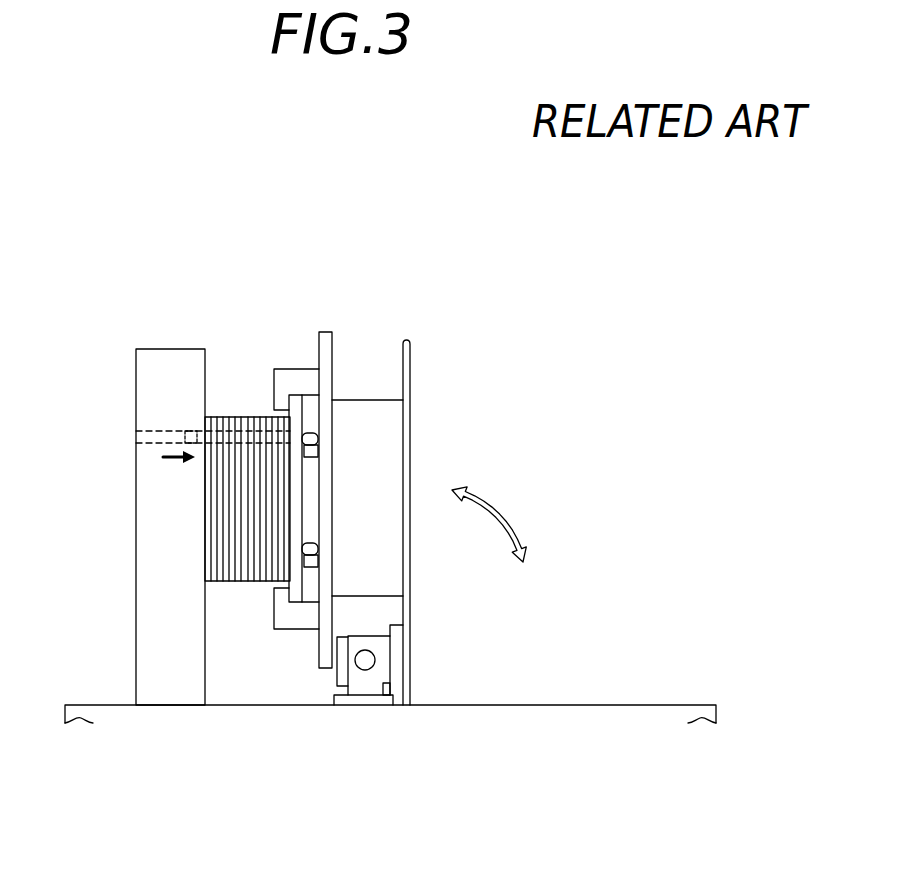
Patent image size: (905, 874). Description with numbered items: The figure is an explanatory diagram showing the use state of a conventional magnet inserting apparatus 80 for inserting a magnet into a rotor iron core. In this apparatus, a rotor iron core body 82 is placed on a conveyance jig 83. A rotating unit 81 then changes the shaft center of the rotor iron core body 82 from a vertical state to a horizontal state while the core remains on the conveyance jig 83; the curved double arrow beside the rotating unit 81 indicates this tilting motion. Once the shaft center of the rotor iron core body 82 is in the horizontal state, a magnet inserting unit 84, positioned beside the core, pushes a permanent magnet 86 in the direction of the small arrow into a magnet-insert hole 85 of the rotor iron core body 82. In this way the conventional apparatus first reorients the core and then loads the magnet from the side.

The magnet inserting apparatus 80 is at (358, 225).
The rotating unit 81 is at (410, 331).
The rotor iron core body 82 is at (221, 405).
The conveyance jig 83 is at (293, 400).
The magnet inserting unit 84 is at (145, 338).
The magnet-insert hole 85 is at (248, 440).
The permanent magnet 86 is at (190, 437).